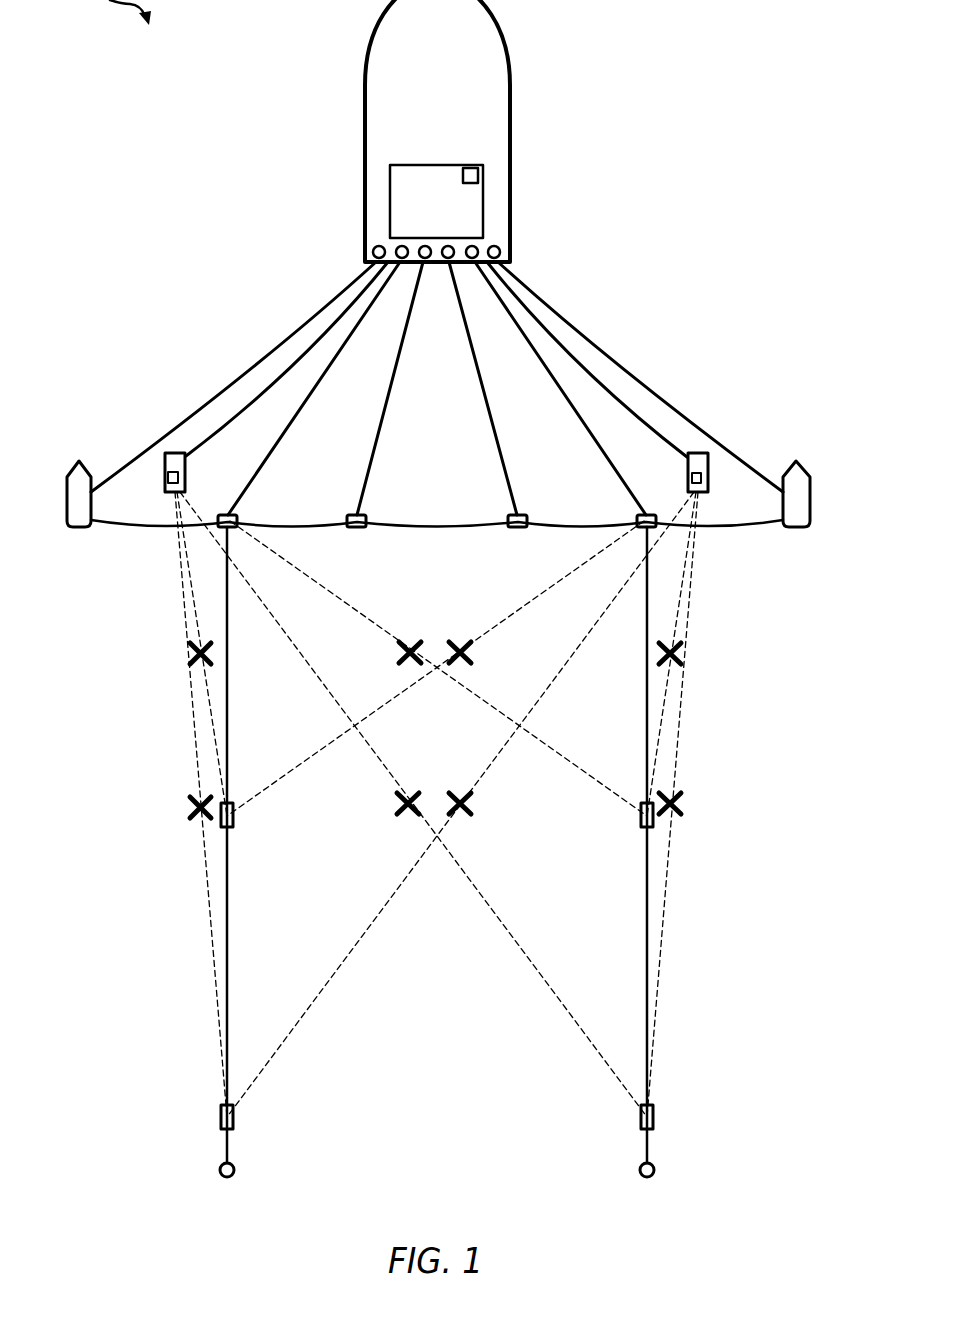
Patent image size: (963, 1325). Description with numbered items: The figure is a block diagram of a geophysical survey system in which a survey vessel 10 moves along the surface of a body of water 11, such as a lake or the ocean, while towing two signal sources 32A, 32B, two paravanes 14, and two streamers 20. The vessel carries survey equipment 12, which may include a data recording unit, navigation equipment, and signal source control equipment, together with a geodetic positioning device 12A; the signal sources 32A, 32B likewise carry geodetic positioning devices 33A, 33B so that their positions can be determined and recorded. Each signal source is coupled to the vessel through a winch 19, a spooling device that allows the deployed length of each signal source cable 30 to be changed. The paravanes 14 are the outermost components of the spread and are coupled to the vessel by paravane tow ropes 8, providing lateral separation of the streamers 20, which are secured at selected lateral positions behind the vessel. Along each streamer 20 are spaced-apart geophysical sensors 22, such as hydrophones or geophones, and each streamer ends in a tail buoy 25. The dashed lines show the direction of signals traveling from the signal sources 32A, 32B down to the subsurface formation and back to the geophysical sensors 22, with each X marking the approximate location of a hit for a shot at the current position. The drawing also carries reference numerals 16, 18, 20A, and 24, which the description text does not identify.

The paravane tow rope 8 is at (267, 355).
The survey vessel 10 is at (449, 91).
The body of water 11 is at (774, 128).
The survey equipment 12 is at (466, 167).
The geodetic positioning device 12A is at (478, 175).
The paravane 14 is at (68, 503).
The lead-in cable 16 is at (250, 480).
The lead-in cable 18 is at (378, 432).
The winch 19 is at (373, 252).
The streamer 20 is at (227, 975).
The streamer front end 20A is at (352, 513).
The geophysical sensor 22 is at (233, 820).
The spreader cable 24 is at (407, 523).
The tail buoy 25 is at (234, 1170).
The signal source cable 30 is at (336, 320).
The signal source 32A is at (173, 452).
The signal source 32B is at (700, 452).
The geodetic positioning device 33A is at (167, 482).
The geodetic positioning device 33B is at (708, 482).